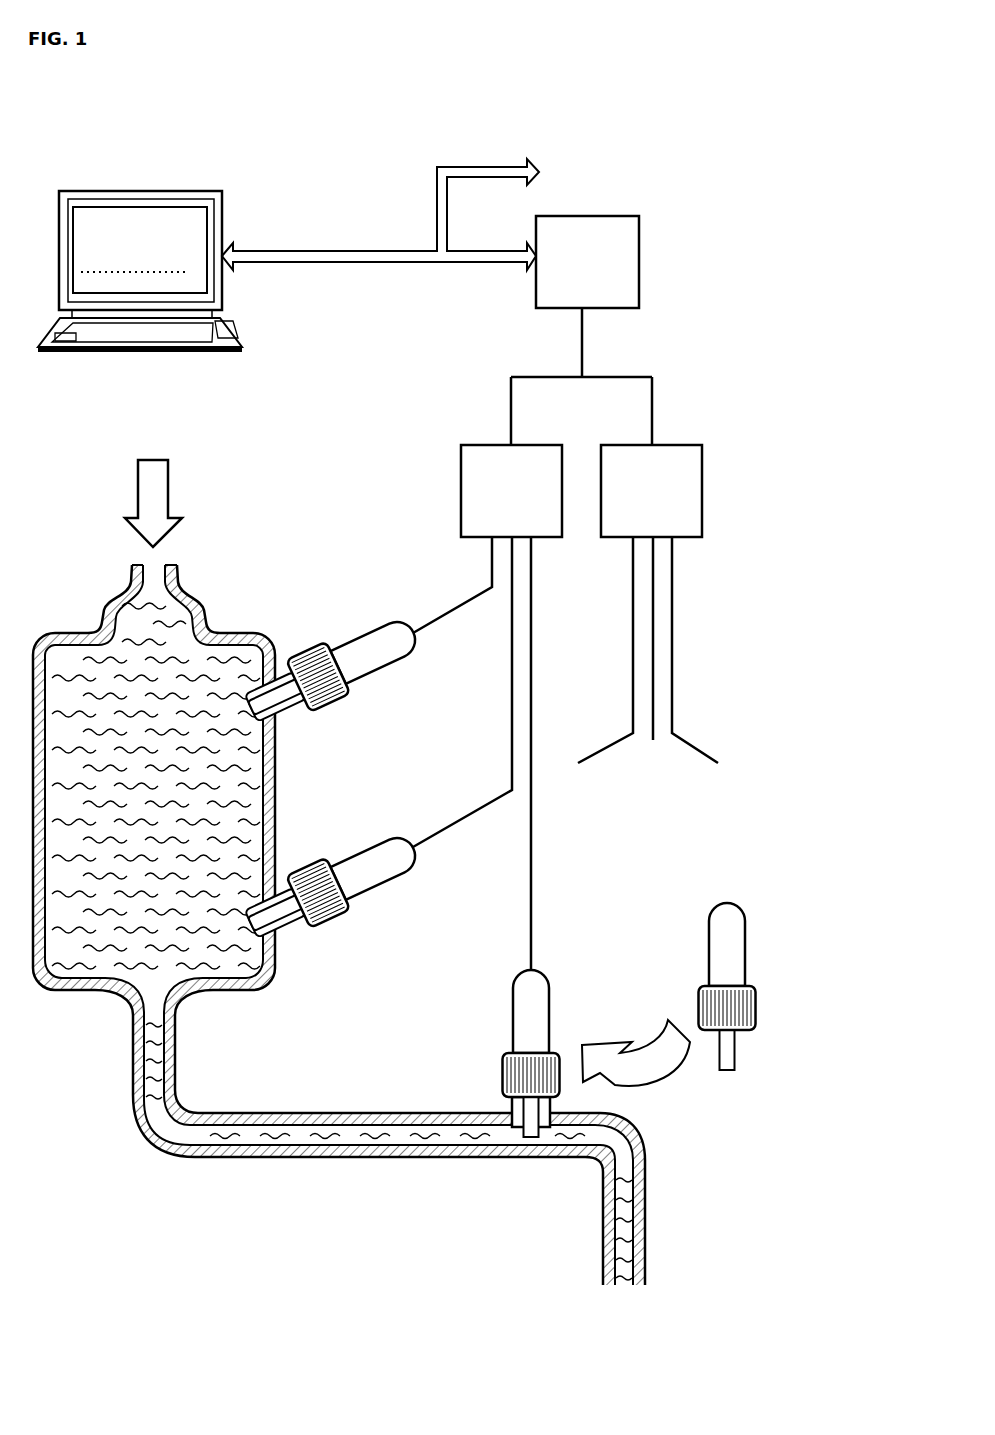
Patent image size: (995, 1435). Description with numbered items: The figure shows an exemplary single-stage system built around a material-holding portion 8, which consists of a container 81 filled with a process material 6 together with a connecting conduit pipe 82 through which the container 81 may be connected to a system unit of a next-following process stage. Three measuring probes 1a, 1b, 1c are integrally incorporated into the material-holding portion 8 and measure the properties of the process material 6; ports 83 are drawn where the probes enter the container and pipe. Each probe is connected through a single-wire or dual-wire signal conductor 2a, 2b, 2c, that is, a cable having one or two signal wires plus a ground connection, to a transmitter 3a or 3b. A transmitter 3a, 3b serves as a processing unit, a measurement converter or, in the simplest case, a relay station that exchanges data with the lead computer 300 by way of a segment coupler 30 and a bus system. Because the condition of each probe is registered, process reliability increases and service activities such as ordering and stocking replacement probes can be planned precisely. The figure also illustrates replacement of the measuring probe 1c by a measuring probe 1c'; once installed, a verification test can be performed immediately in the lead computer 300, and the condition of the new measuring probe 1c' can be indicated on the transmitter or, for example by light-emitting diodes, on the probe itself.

The lead computer 300 is at (160, 187).
The segment coupler 30 is at (587, 262).
The transmitter 3a is at (511, 491).
The transmitter 3b is at (651, 491).
The process material 6 is at (221, 658).
The measuring probe 1a is at (352, 627).
The measuring probe 1b is at (352, 840).
The measuring probe 1c is at (523, 1024).
The measuring probe 1c' is at (719, 956).
The signal conductor 2a is at (448, 618).
The signal conductor 2b is at (453, 830).
The signal conductor 2c is at (538, 838).
The container 81 is at (275, 812).
The connecting conduit pipe 82 is at (325, 1112).
The port / access opening 83 is at (292, 942).
The material-holding portion 8 is at (125, 1130).